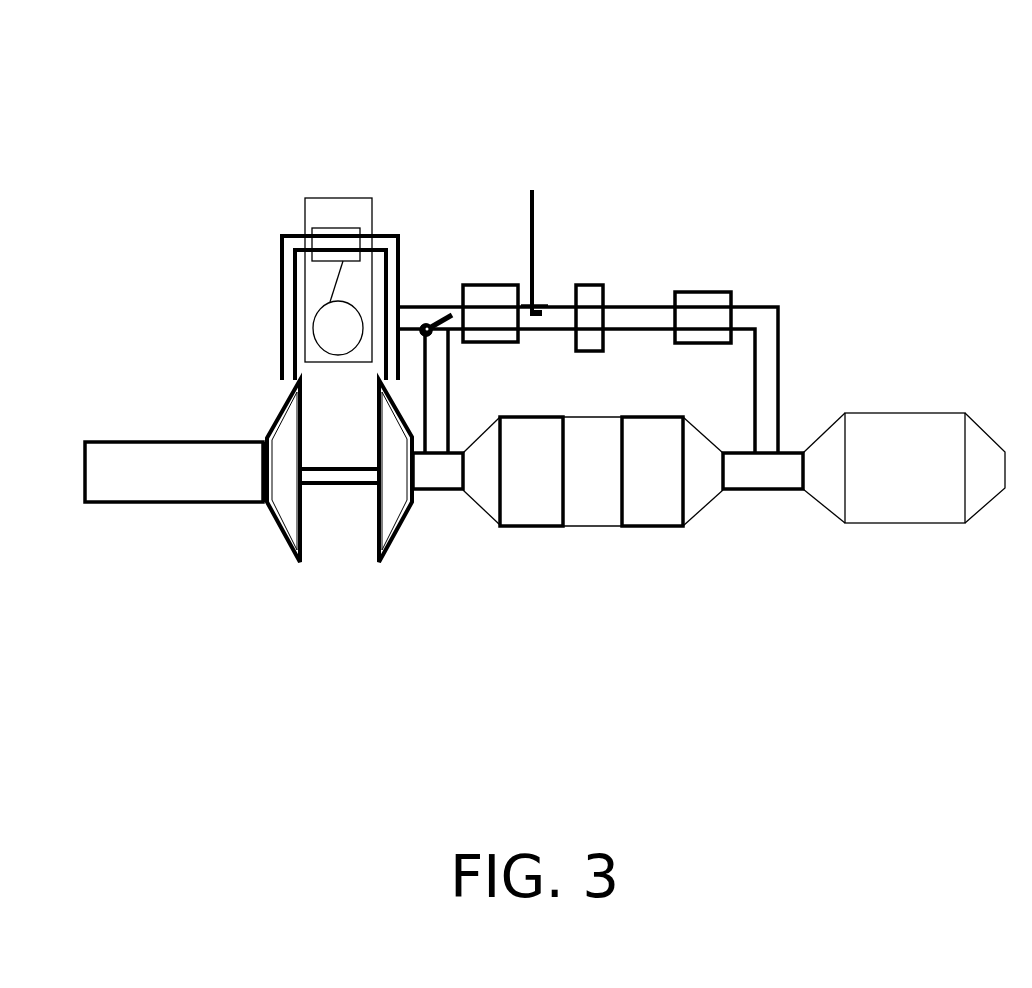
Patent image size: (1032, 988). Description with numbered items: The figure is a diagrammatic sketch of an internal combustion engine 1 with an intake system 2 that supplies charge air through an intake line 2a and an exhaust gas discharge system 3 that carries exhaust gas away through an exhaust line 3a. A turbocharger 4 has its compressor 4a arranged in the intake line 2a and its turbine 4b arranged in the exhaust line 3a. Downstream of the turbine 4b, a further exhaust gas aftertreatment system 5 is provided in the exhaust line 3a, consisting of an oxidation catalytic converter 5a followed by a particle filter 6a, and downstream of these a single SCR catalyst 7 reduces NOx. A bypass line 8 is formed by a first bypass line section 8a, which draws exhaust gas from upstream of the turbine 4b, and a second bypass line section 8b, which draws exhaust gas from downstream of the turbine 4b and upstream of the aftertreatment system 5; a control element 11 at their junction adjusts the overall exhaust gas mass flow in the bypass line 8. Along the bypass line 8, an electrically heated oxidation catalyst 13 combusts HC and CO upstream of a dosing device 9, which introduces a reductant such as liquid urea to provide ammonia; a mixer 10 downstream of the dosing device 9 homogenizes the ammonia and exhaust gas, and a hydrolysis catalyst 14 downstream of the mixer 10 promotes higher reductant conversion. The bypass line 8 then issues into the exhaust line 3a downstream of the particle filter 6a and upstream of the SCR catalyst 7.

The internal combustion engine 1 is at (360, 112).
The intake system 2 is at (88, 362).
The intake line 2a is at (140, 468).
The exhaust gas discharge system 3 is at (648, 230).
The exhaust line 3a is at (780, 477).
The turbocharger 4 is at (348, 487).
The compressor 4a is at (285, 517).
The turbine 4b is at (392, 503).
The further exhaust gas aftertreatment system 5 is at (593, 518).
The oxidation catalytic converter 5a is at (522, 492).
The particle filter 6a is at (647, 502).
The SCR catalyst 7 is at (915, 488).
The bypass line 8 is at (760, 318).
The first bypass line section 8a is at (424, 312).
The second bypass line section 8b is at (438, 402).
The dosing device 9 is at (533, 235).
The mixer 10 is at (589, 280).
The control element 11 is at (432, 327).
The electrically heated oxidation catalyst 13 is at (490, 285).
The hydrolysis catalyst 14 is at (698, 290).